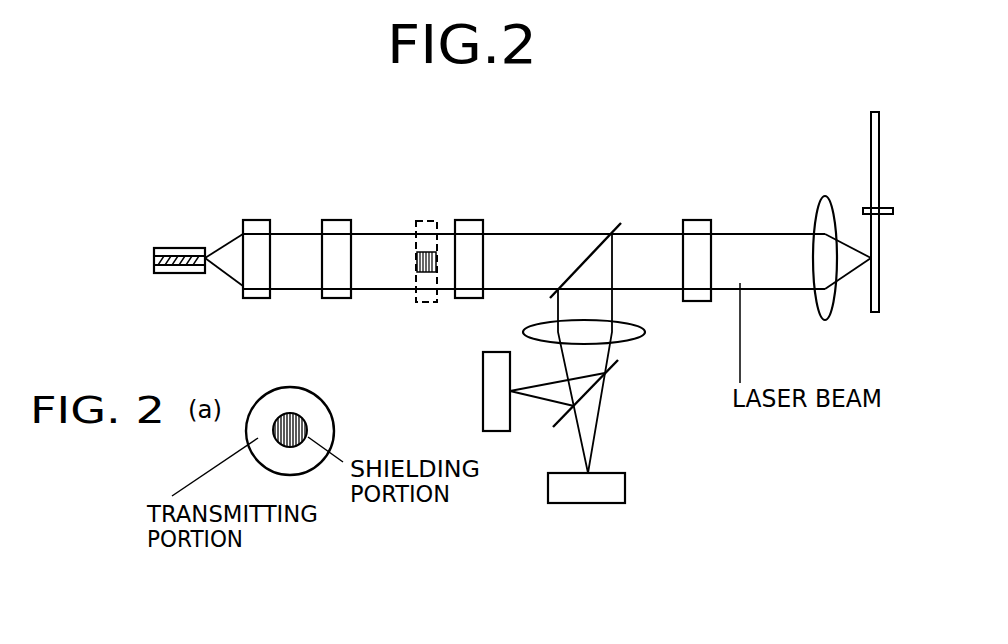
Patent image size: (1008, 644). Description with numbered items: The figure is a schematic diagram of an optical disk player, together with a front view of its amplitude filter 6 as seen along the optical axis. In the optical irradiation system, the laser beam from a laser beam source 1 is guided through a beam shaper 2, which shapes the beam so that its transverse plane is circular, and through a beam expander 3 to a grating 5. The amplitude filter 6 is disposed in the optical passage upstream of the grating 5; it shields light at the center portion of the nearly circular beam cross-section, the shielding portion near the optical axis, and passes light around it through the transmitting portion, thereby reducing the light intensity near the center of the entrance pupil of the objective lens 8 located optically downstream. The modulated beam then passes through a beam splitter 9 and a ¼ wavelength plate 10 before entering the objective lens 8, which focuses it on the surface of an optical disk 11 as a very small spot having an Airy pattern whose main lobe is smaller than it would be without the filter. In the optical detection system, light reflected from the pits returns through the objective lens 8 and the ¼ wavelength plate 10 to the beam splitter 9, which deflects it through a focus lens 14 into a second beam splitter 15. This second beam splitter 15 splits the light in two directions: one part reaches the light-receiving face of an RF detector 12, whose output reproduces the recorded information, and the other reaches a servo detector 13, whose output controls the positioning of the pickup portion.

In FIG. 2, the laser beam source 1 is at (172, 247).
In FIG. 2, the beam shaper 2 is at (257, 219).
In FIG. 2, the beam expander 3 is at (341, 219).
In FIG. 2, the grating 5 is at (472, 219).
In FIG. 2, the amplitude filter 6 is at (427, 220).
In FIG. 2A, the amplitude filter 6 is at (266, 391).
In FIG. 2, the objective lens 8 is at (828, 197).
In FIG. 2, the beam splitter 9 is at (620, 221).
In FIG. 2, the ¼ wavelength plate 10 is at (697, 219).
In FIG. 2, the optical disk 11 is at (876, 312).
In FIG. 2, the RF detector 12 is at (483, 392).
In FIG. 2, the servo detector 13 is at (568, 497).
In FIG. 2, the focus lens 14 is at (645, 332).
In FIG. 2, the second beam splitter 15 is at (618, 360).